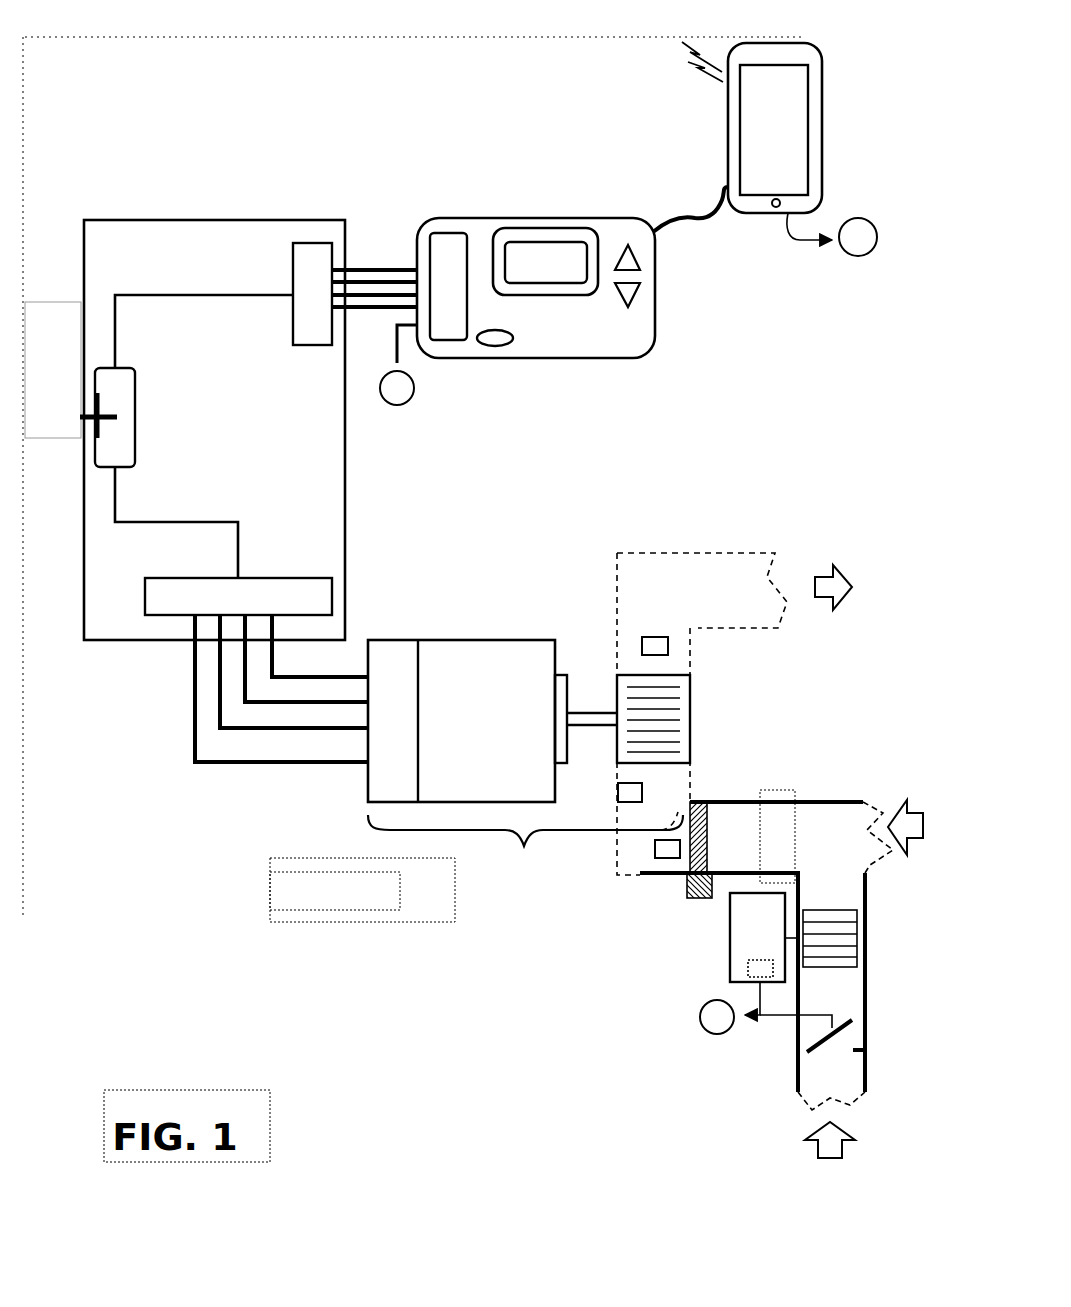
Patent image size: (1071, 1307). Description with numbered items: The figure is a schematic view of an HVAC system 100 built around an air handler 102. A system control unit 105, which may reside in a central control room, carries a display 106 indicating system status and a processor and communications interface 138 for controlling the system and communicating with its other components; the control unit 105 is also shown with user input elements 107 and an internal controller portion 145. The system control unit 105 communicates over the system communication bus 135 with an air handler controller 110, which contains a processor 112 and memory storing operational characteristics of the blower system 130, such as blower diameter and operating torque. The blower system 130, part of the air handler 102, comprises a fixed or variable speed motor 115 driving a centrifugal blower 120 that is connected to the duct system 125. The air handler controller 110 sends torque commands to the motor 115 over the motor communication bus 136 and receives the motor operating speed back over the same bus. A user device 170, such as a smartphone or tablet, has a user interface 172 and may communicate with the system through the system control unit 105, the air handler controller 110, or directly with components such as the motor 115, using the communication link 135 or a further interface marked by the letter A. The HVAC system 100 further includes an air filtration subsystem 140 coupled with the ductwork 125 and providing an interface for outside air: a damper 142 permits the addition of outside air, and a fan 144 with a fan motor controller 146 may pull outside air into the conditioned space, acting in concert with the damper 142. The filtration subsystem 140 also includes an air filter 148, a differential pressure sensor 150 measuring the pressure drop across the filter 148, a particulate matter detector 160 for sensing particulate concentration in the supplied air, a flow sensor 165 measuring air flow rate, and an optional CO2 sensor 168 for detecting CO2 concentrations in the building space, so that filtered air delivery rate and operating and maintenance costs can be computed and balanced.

The HVAC system 100 is at (188, 136).
The air handler 102 is at (254, 898).
The system control unit 105 is at (518, 218).
The display 106 is at (543, 296).
The user input buttons 107 is at (630, 252).
The air handler controller 110 is at (209, 220).
The processor 112 is at (138, 385).
The variable speed motor 115 is at (393, 657).
The centrifugal blower 120 is at (628, 677).
The duct system 125 is at (722, 553).
The blower system 130 is at (525, 851).
The system communication bus 135 is at (805, 283).
The motor communication bus 136 is at (242, 763).
The processor and communications interface 138 is at (368, 267).
The air filtration subsystem 140 is at (500, 978).
The damper 142 is at (802, 1050).
The fan 144 is at (730, 905).
The thermostat controller 145 is at (442, 233).
The fan motor controller 146 is at (744, 972).
The air filter 148 is at (708, 812).
The differential pressure sensor 150 is at (690, 890).
The particulate matter detector 160 is at (642, 870).
The flow sensor 165 is at (698, 795).
The CO2 sensor 168 is at (668, 645).
The user device 170 is at (818, 175).
The user interface 172 is at (774, 130).